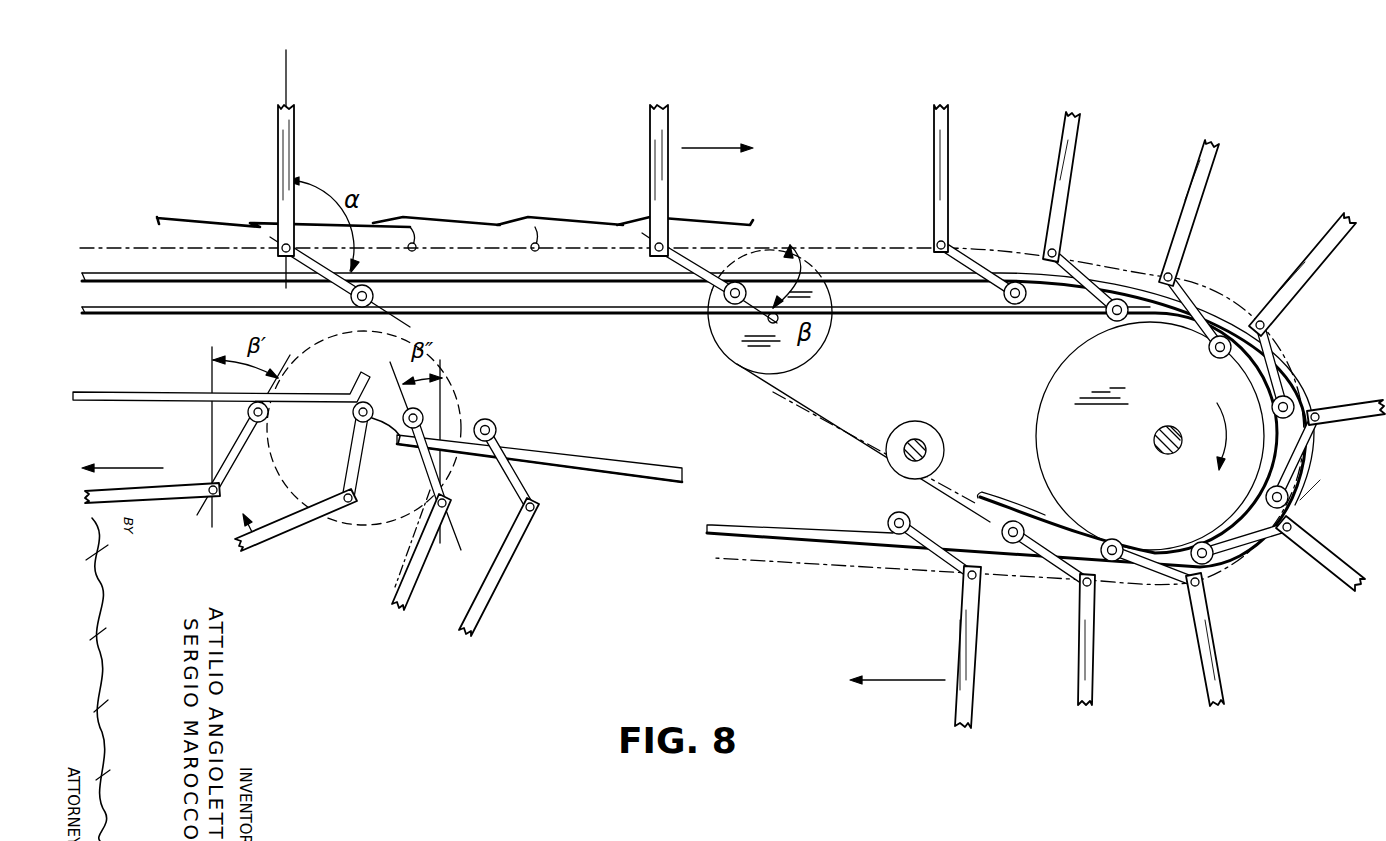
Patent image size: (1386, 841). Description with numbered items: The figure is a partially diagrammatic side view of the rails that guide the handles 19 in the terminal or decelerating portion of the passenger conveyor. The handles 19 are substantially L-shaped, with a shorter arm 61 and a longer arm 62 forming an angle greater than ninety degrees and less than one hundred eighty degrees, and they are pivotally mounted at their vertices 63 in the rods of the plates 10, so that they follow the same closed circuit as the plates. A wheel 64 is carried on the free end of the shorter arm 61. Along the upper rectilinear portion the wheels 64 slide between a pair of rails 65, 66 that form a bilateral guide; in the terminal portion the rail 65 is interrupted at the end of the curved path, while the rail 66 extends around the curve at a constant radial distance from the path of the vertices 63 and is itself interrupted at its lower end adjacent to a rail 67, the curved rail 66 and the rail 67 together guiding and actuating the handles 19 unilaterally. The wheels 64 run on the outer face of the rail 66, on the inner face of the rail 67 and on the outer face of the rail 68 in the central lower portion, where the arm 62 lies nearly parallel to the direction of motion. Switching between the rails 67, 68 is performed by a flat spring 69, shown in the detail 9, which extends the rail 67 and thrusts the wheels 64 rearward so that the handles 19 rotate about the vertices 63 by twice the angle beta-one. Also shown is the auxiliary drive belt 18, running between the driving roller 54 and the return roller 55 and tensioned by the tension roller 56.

The needle transfer zone detail 9 is at (468, 392).
The plates 10 is at (440, 211).
The auxiliary drive belt 18 is at (808, 423).
The handles 19 is at (1046, 164).
The driving roller 54 is at (1055, 378).
The return roller 55 is at (816, 356).
The tension roller 56 is at (922, 428).
The shorter arm 61 is at (985, 275).
The longer arm 62 is at (932, 128).
The vertex 63 is at (950, 240).
The wheel 64 is at (1000, 297).
The rail 65 is at (877, 278).
The rail 66 is at (638, 315).
The rail 67 is at (583, 462).
The rail 68 is at (152, 393).
The flat spring 69 is at (383, 437).